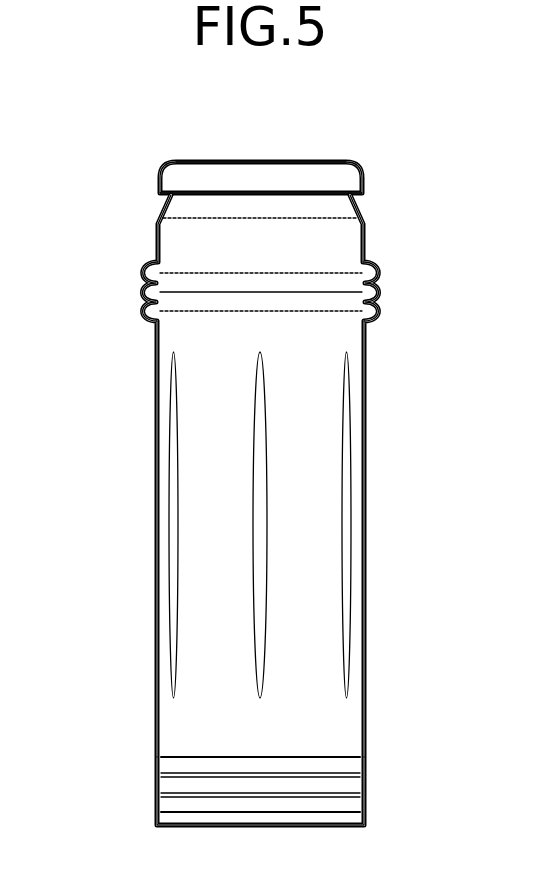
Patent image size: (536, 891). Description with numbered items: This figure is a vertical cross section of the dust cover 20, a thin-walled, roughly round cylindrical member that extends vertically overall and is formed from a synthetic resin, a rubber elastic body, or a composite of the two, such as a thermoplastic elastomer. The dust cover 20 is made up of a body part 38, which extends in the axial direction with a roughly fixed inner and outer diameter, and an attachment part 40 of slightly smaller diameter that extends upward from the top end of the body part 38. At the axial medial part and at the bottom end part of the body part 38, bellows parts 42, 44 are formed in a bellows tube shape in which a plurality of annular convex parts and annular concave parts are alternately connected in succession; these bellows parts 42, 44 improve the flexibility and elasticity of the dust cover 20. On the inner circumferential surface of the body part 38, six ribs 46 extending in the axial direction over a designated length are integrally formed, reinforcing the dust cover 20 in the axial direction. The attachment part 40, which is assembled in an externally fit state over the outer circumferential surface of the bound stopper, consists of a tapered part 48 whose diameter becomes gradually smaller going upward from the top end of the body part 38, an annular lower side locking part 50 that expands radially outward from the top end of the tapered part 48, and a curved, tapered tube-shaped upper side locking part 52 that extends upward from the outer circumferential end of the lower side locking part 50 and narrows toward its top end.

The dust cover 20 is at (409, 123).
The body part 38 is at (378, 537).
The attachment part 40 is at (52, 185).
The bellows part 42 is at (392, 289).
The bellows part 44 is at (146, 779).
The rib 46 is at (176, 540).
The tapered part 48 is at (157, 218).
The lower side locking part 50 is at (163, 198).
The upper side locking part 52 is at (168, 173).